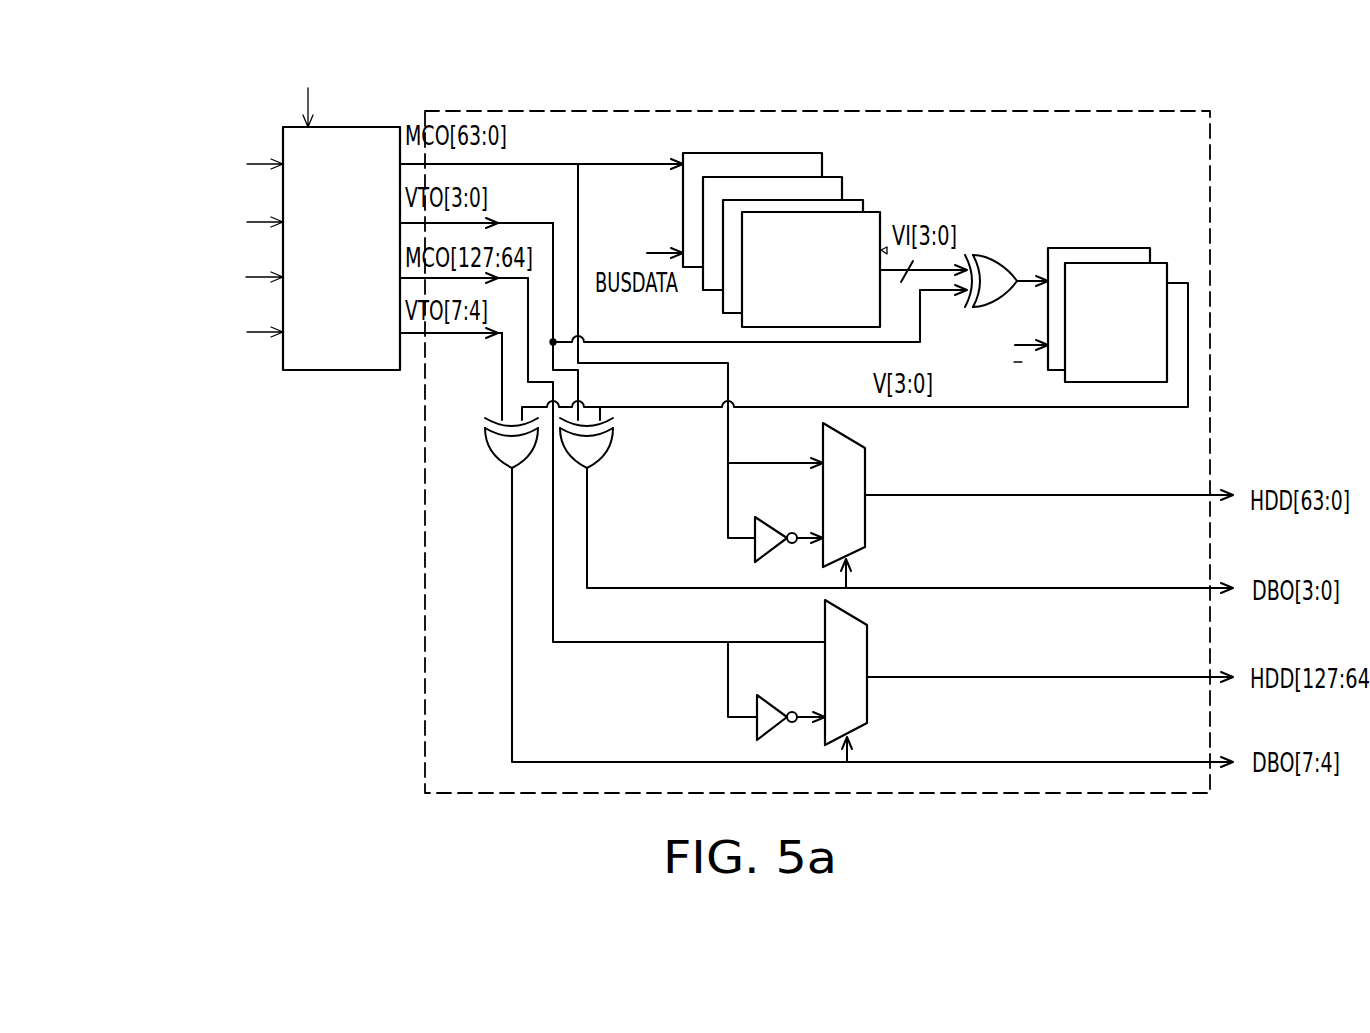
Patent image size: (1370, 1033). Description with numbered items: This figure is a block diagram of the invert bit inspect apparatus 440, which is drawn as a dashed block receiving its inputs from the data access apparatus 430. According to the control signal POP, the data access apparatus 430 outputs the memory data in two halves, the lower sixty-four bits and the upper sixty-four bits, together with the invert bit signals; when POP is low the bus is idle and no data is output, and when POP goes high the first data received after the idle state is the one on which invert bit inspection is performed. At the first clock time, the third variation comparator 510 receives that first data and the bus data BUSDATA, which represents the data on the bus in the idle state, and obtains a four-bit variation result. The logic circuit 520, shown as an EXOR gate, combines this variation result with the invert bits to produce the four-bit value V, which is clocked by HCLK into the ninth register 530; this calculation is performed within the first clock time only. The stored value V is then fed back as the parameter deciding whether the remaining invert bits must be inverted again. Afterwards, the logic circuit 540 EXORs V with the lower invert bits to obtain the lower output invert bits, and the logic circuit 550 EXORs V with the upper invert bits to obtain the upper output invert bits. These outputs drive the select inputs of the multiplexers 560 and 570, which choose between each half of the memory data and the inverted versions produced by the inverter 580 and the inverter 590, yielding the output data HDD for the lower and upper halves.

The data access apparatus 430 is at (318, 372).
The invert bit inspect apparatus 440 is at (864, 111).
The third variation comparator 510 is at (872, 212).
The logic circuit 520 is at (990, 255).
The ninth register 530 is at (1160, 262).
The logic circuit 540 is at (610, 455).
The logic circuit 550 is at (490, 460).
The multiplexer 560 is at (868, 475).
The multiplexer 570 is at (868, 643).
The inverter 580 is at (755, 545).
The inverter 590 is at (757, 725).